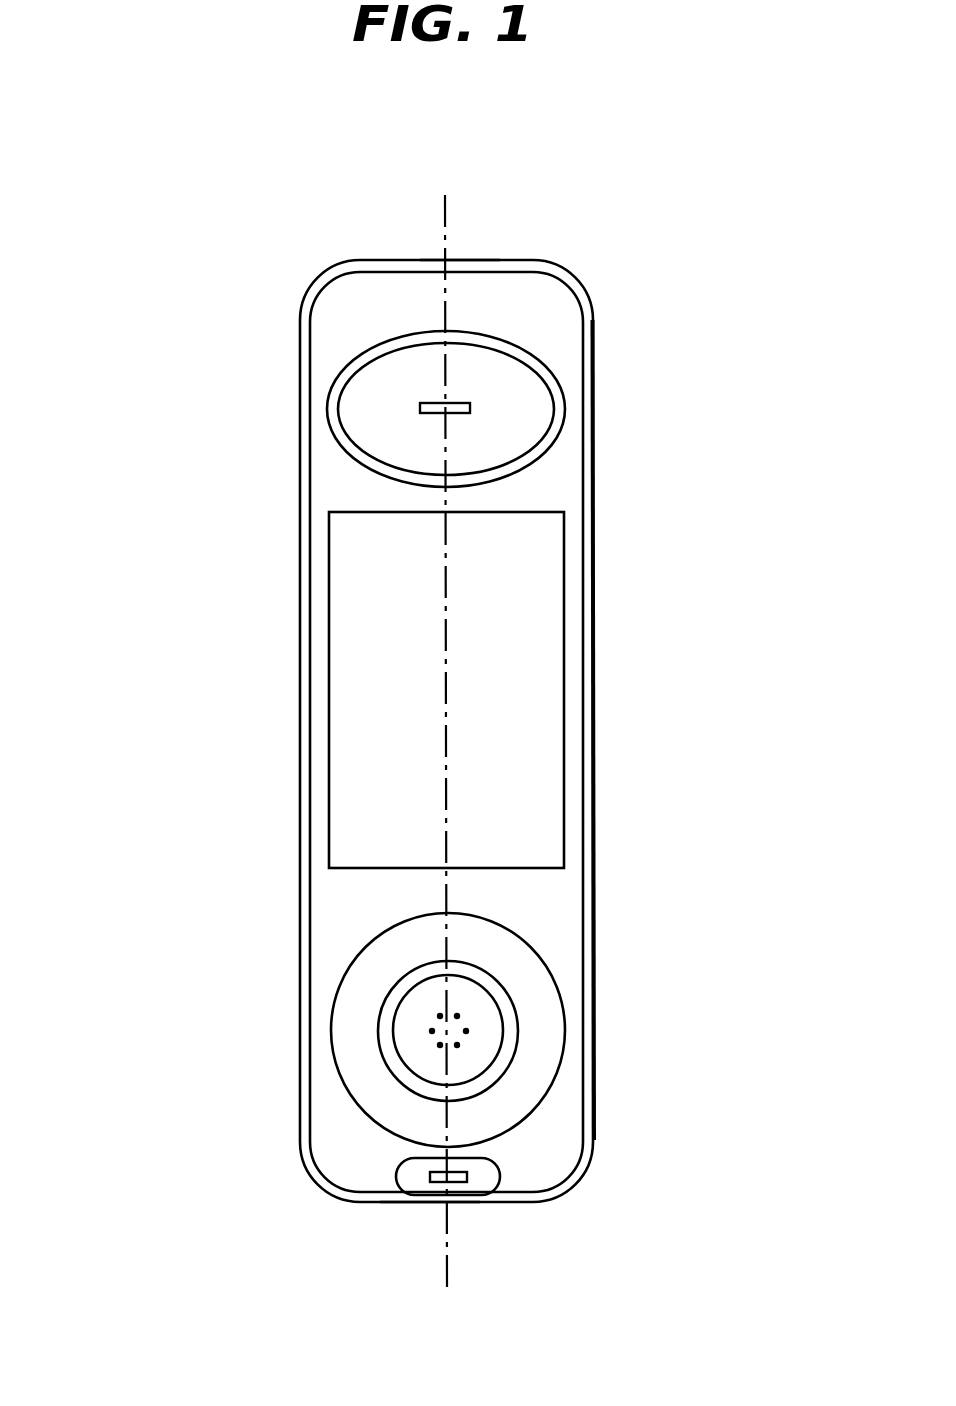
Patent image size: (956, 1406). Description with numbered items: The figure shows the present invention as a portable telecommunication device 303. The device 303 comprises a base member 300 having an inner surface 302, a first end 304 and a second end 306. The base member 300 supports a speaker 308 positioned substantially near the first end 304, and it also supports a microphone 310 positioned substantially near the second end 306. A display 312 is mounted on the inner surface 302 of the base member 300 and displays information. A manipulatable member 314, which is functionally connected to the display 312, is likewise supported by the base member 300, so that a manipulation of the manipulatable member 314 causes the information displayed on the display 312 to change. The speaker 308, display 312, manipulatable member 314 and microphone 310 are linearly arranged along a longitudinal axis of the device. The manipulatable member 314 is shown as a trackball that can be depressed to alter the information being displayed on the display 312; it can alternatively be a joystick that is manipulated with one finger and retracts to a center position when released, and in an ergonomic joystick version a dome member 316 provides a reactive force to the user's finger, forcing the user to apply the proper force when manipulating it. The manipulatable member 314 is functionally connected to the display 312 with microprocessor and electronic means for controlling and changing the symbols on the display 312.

The base member 300 is at (594, 560).
The inner surface 302 is at (543, 312).
The device 303 is at (150, 428).
The first end 304 is at (492, 261).
The second end 306 is at (388, 1205).
The speaker 308 is at (510, 401).
The microphone 310 is at (472, 1226).
The display 312 is at (545, 666).
The manipulatable member 314 is at (518, 1019).
The dome member 316 is at (444, 230).